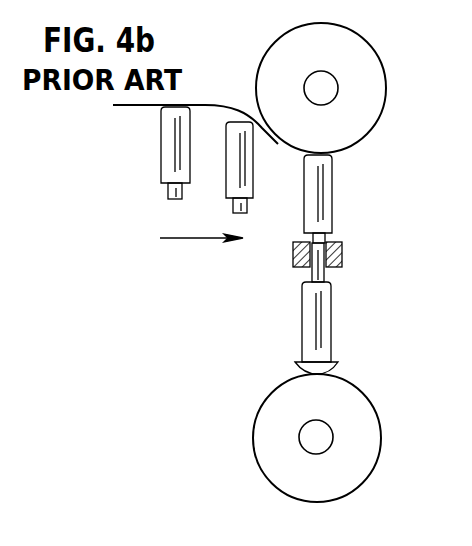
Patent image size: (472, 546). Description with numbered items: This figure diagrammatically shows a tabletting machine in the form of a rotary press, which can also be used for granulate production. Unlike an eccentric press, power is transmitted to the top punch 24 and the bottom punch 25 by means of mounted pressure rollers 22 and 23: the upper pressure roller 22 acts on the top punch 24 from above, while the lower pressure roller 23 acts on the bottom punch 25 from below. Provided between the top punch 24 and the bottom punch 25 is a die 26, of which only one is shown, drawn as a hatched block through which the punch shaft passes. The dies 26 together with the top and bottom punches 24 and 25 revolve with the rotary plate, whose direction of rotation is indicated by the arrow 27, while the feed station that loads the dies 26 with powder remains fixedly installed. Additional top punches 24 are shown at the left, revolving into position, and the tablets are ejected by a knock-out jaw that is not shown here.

The pressure roller 22 is at (372, 80).
The pressure roller 23 is at (355, 445).
The top punch 24 is at (235, 167).
The bottom punch 25 is at (326, 333).
The die 26 is at (343, 258).
The arrow 27 is at (183, 239).